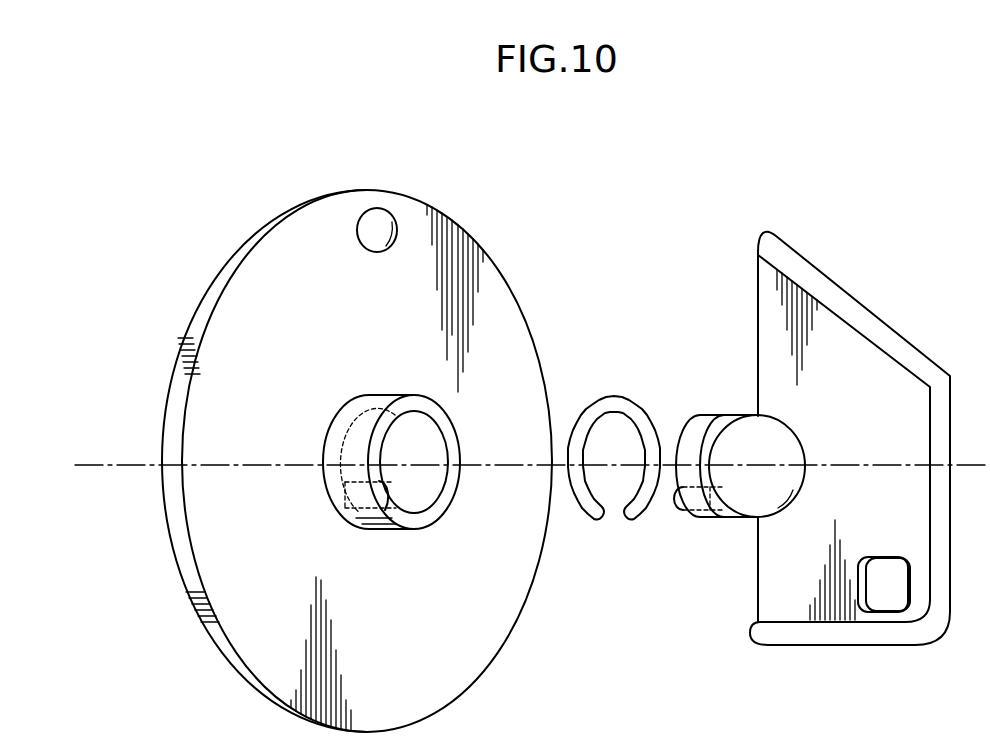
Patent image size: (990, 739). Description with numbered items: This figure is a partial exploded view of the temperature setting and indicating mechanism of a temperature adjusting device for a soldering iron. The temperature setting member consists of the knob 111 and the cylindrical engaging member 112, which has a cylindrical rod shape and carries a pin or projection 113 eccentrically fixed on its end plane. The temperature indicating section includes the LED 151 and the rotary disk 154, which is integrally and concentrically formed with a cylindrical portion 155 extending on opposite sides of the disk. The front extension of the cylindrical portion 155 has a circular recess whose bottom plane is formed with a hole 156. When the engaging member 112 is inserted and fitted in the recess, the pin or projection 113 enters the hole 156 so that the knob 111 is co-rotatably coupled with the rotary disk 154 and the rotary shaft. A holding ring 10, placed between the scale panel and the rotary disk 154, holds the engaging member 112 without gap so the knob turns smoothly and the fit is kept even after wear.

The holding ring 10 is at (628, 522).
The knob 111 is at (800, 597).
The cylindrical engaging member 112 is at (750, 497).
The pin or projection 113 is at (672, 512).
The LED 151 is at (372, 228).
The rotary disk 154 is at (272, 306).
The cylindrical portion 155 is at (445, 425).
The hole 156 is at (352, 492).